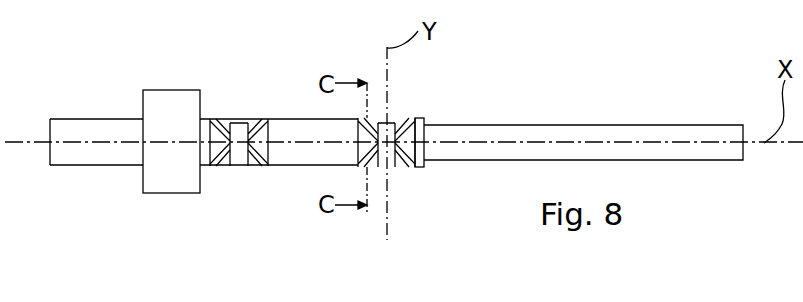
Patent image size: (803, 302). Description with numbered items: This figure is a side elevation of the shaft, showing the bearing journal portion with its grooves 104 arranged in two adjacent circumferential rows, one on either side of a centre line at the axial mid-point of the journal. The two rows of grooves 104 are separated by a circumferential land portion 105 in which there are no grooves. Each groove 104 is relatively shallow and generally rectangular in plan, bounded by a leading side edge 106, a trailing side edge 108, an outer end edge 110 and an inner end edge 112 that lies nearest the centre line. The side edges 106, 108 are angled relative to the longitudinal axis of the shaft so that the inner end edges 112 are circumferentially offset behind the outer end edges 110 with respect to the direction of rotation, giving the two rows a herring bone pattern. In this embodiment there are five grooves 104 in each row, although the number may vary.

The grooves 104 is at (218, 158).
The circumferential land portion 105 is at (228, 150).
The leading side edge 106 is at (406, 152).
The trailing side edge 108 is at (402, 125).
The outer end edge 110 is at (428, 121).
The inner end edge 112 is at (392, 122).